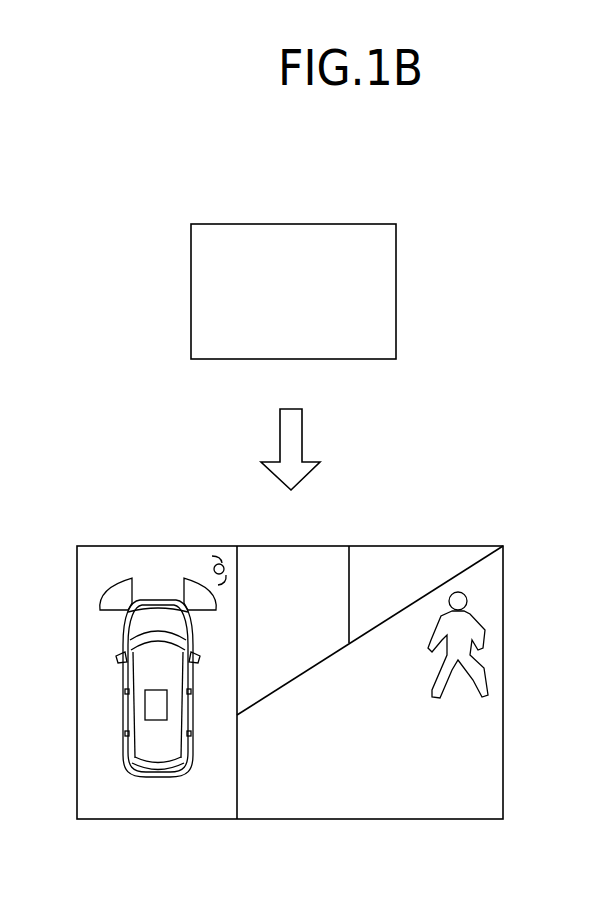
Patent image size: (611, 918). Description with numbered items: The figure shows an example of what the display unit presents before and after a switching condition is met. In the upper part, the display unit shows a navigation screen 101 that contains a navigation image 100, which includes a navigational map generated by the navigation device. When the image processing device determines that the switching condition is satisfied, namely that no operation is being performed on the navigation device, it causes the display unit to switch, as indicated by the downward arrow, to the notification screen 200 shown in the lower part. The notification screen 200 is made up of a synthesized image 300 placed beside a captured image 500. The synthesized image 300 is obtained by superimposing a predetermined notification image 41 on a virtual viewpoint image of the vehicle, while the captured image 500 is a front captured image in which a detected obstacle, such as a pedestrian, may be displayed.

The navigation screen 101 is at (420, 190).
The navigation image 100 is at (396, 232).
The notification screen 200 is at (518, 538).
The synthesized image 300 is at (152, 820).
The captured image 500 is at (375, 820).
The notification image 41 is at (123, 577).